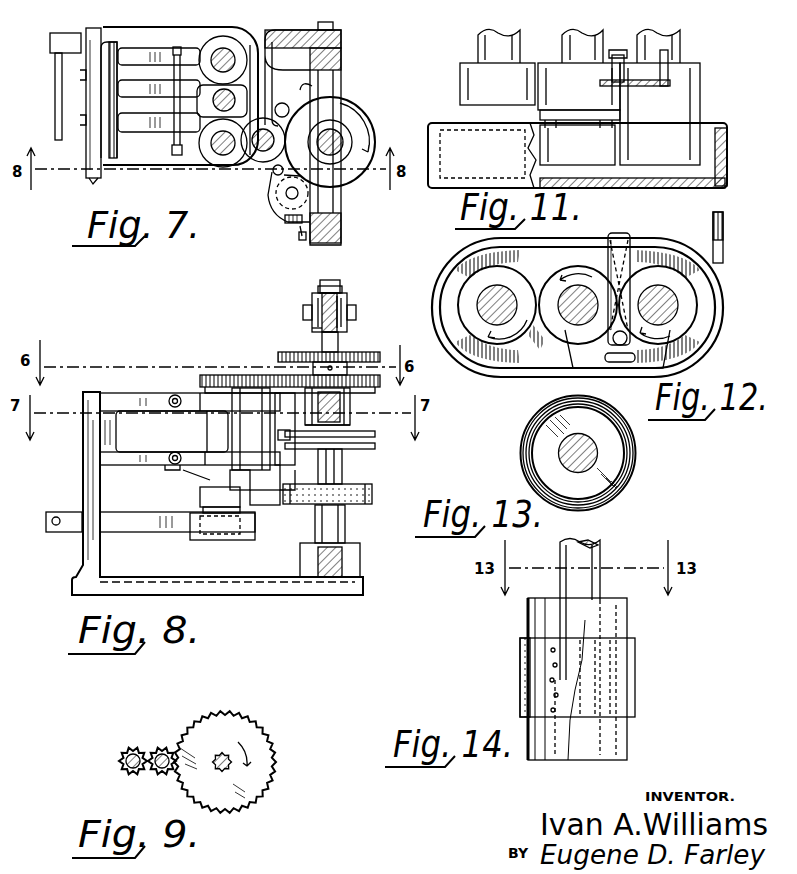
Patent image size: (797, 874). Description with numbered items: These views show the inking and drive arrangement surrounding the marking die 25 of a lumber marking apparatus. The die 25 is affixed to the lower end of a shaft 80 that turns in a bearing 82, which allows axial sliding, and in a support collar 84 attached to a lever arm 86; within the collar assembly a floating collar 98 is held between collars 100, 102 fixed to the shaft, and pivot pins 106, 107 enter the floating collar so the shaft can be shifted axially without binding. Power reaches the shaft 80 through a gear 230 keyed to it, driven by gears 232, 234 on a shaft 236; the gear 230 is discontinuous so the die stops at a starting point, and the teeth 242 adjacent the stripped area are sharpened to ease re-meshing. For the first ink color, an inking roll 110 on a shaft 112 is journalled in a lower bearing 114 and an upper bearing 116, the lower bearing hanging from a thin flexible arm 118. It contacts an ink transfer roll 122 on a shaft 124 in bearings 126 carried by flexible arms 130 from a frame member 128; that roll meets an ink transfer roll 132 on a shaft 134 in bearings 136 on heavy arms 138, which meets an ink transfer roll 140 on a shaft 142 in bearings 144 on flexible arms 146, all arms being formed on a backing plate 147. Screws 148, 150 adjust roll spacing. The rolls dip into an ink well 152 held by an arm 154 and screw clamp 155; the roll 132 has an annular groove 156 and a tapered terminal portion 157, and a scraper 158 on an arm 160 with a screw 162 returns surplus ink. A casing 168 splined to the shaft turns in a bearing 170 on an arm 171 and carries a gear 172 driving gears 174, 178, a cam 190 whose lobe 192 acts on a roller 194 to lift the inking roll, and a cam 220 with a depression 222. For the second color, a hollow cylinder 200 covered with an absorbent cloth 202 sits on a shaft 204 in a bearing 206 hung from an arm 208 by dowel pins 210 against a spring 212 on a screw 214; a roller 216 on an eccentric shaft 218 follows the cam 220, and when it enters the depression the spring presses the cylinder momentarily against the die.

In FIG. 8, the die 25 is at (372, 492).
In FIG. 8, the shaft 80 is at (346, 528).
In FIG. 9, the shaft 80 is at (217, 769).
In FIG. 8, the bearing 82 is at (356, 550).
In FIG. 8, the support collar 84 is at (312, 332).
In FIG. 8, the lever arm 86 is at (345, 302).
In FIG. 8, the floating collar 98 is at (343, 290).
In FIG. 8, the collar 100 is at (312, 296).
In FIG. 8, the collar 102 is at (340, 340).
In FIG. 8, the pivot pin 106 is at (303, 313).
In FIG. 8, the pivot pin 107 is at (356, 311).
In FIG. 7, the inking roll 110 is at (263, 162).
In FIG. 8, the inking roll 110 is at (262, 505).
In FIG. 7, the shaft 112 is at (275, 141).
In FIG. 8, the shaft 112 is at (250, 418).
In FIG. 7, the lower bearing 114 is at (262, 163).
In FIG. 8, the lower bearing 114 is at (292, 468).
In FIG. 8, the upper bearing 116 is at (290, 429).
In FIG. 7, the flexible arm 118 is at (271, 67).
In FIG. 7, the ink transfer roll 122 is at (247, 161).
In FIG. 8, the ink transfer roll 122 is at (200, 492).
In FIG. 11, the ink transfer roll 122 is at (460, 63).
In FIG. 12, the ink transfer roll 122 is at (460, 300).
In FIG. 7, the shaft 124 is at (215, 153).
In FIG. 8, the shaft 124 is at (208, 434).
In FIG. 11, the shaft 124 is at (478, 37).
In FIG. 12, the shaft 124 is at (508, 292).
In FIG. 7, the bearing 126 is at (226, 167).
In FIG. 8, the bearing 126 is at (212, 462).
In FIG. 7, the frame member 128 is at (93, 140).
In FIG. 8, the frame member 128 is at (90, 448).
In FIG. 7, the flexible arm 130 is at (138, 120).
In FIG. 8, the flexible arm 130 is at (135, 466).
In FIG. 7, the ink transfer roll 132 is at (268, 126).
In FIG. 8, the ink transfer roll 132 is at (203, 509).
In FIG. 11, the ink transfer roll 132 is at (555, 72).
In FIG. 12, the ink transfer roll 132 is at (555, 278).
In FIG. 7, the shaft 134 is at (215, 106).
In FIG. 11, the shaft 134 is at (562, 38).
In FIG. 12, the shaft 134 is at (590, 295).
In FIG. 7, the bearing 136 is at (245, 92).
In FIG. 7, the arm 138 is at (137, 90).
In FIG. 7, the ink transfer roll 140 is at (214, 99).
In FIG. 11, the ink transfer roll 140 is at (700, 70).
In FIG. 12, the ink transfer roll 140 is at (672, 278).
In FIG. 7, the shaft 142 is at (229, 56).
In FIG. 11, the shaft 142 is at (640, 40).
In FIG. 12, the shaft 142 is at (672, 294).
In FIG. 7, the bearing 144 is at (222, 48).
In FIG. 7, the flexible arm 146 is at (137, 55).
In FIG. 7, the backing plate 147 is at (106, 78).
In FIG. 8, the backing plate 147 is at (120, 438).
In FIG. 7, the screw 148 is at (176, 155).
In FIG. 8, the screw 148 is at (170, 458).
In FIG. 7, the screw 150 is at (175, 47).
In FIG. 7, the ink well 152 is at (268, 54).
In FIG. 8, the ink well 152 is at (242, 535).
In FIG. 11, the ink well 152 is at (728, 165).
In FIG. 12, the ink well 152 is at (450, 258).
In FIG. 7, the arm 154 is at (125, 26).
In FIG. 8, the arm 154 is at (132, 527).
In FIG. 12, the arm 154 is at (723, 234).
In FIG. 8, the screw clamp 155 is at (68, 530).
In FIG. 7, the annular groove 156 is at (70, 30).
In FIG. 11, the annular groove 156 is at (540, 116).
In FIG. 11, the tapered terminal portion 157 is at (540, 155).
In FIG. 8, the scraper 158 is at (241, 479).
In FIG. 11, the scraper 158 is at (652, 88).
In FIG. 12, the scraper 158 is at (665, 356).
In FIG. 8, the arm 160 is at (178, 474).
In FIG. 11, the arm 160 is at (660, 58).
In FIG. 12, the arm 160 is at (628, 236).
In FIG. 11, the screw 162 is at (618, 52).
In FIG. 12, the screw 162 is at (612, 338).
In FIG. 8, the casing 168 is at (342, 458).
In FIG. 8, the bearing 170 is at (352, 411).
In FIG. 8, the arm 171 is at (352, 424).
In FIG. 8, the gear 172 is at (352, 398).
In FIG. 8, the gear 174 is at (260, 376).
In FIG. 8, the gear 178 is at (203, 376).
In FIG. 8, the cam 190 is at (375, 447).
In FIG. 7, the lobe 192 is at (302, 92).
In FIG. 7, the roller 194 is at (282, 103).
In FIG. 8, the roller 194 is at (285, 429).
In FIG. 7, the hollow cylinder 200 is at (278, 213).
In FIG. 13, the hollow cylinder 200 is at (552, 466).
In FIG. 14, the hollow cylinder 200 is at (627, 630).
In FIG. 13, the absorbent cloth 202 is at (636, 454).
In FIG. 14, the absorbent cloth 202 is at (635, 665).
In FIG. 7, the shaft 204 is at (332, 188).
In FIG. 13, the shaft 204 is at (590, 444).
In FIG. 14, the shaft 204 is at (600, 552).
In FIG. 7, the bearing 206 is at (276, 198).
In FIG. 7, the arm 208 is at (295, 250).
In FIG. 7, the dowel pin 210 is at (304, 236).
In FIG. 7, the spring 212 is at (298, 228).
In FIG. 7, the screw 214 is at (285, 221).
In FIG. 7, the roller 216 is at (314, 166).
In FIG. 7, the shaft 218 is at (328, 183).
In FIG. 7, the cam 220 is at (358, 106).
In FIG. 8, the cam 220 is at (375, 434).
In FIG. 7, the depression 222 is at (308, 140).
In FIG. 8, the gear 230 is at (280, 353).
In FIG. 9, the gear 230 is at (255, 745).
In FIG. 9, the gear 232 is at (160, 772).
In FIG. 9, the gear 234 is at (125, 768).
In FIG. 9, the shaft 236 is at (139, 744).
In FIG. 9, the teeth 242 is at (178, 780).